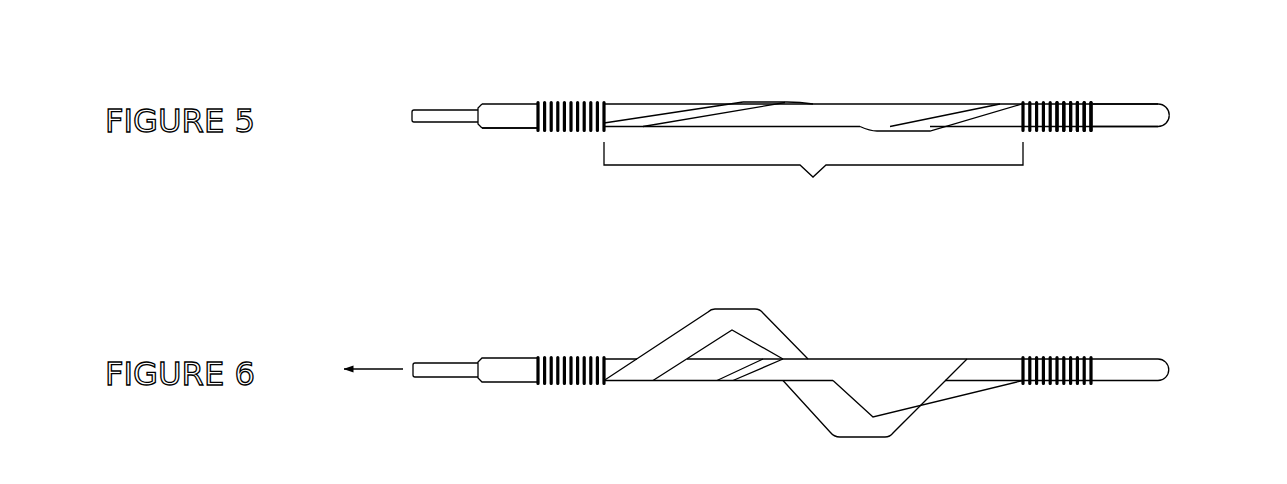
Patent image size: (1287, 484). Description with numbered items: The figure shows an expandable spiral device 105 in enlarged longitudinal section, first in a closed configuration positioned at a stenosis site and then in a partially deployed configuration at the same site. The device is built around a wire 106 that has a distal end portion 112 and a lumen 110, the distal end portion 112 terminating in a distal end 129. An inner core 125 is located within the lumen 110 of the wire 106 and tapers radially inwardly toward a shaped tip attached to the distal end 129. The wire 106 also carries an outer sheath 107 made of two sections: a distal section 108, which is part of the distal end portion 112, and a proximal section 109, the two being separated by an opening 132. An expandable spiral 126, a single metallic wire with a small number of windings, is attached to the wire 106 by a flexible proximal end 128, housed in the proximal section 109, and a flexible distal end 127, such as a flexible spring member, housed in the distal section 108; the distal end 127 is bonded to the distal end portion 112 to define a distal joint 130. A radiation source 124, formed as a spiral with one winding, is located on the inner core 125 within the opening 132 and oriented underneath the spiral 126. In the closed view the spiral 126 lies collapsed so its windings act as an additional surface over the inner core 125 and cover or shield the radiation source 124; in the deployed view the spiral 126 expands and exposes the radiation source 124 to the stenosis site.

In FIG. 5, the expandable spiral device 105 is at (650, 98).
In FIG. 6, the expandable spiral device 105 is at (618, 355).
In FIG. 5, the wire 106 is at (480, 107).
In FIG. 5, the outer sheath 107 is at (510, 103).
In FIG. 5, the distal section 108 is at (1120, 129).
In FIG. 5, the proximal section 109 is at (517, 130).
In FIG. 5, the lumen 110 is at (475, 133).
In FIG. 5, the distal end portion 112 is at (1150, 102).
In FIG. 6, the radiation source 124 is at (728, 381).
In FIG. 5, the inner core 125 is at (833, 112).
In FIG. 6, the inner core 125 is at (886, 370).
In FIG. 5, the spiral 126 is at (753, 100).
In FIG. 6, the spiral 126 is at (782, 338).
In FIG. 5, the flexible distal end 127 is at (1062, 100).
In FIG. 6, the flexible distal end 127 is at (1057, 371).
In FIG. 5, the flexible proximal end 128 is at (557, 102).
In FIG. 6, the flexible proximal end 128 is at (571, 371).
In FIG. 5, the distal end 129 is at (1177, 118).
In FIG. 5, the distal joint 130 is at (1075, 133).
In FIG. 5, the opening 132 is at (813, 173).